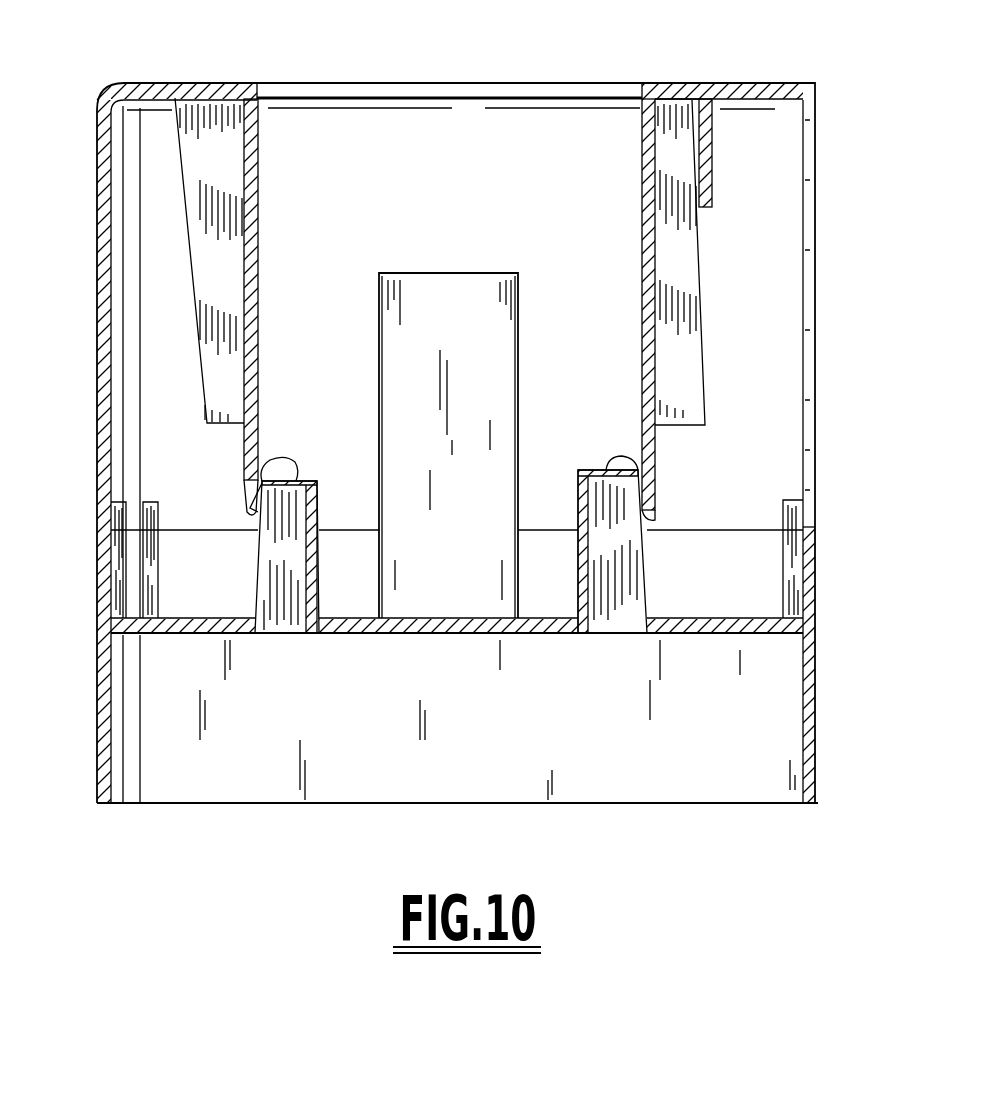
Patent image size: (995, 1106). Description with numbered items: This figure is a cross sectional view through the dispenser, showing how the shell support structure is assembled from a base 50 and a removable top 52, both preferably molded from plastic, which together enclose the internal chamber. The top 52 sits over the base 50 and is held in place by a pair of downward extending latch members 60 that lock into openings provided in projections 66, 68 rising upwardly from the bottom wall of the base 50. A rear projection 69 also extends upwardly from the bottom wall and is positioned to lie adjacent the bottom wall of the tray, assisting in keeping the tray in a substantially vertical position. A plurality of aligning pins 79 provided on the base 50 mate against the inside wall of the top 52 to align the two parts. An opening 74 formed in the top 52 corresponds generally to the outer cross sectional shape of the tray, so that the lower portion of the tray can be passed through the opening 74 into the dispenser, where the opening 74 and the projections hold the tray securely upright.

The base 50 is at (818, 728).
The top 52 is at (813, 268).
The latch member 60 is at (256, 212).
The projection 66 is at (318, 478).
The projection 68 is at (578, 480).
The rear projection 69 is at (481, 240).
The opening 74 is at (376, 85).
The aligning pin 79 is at (113, 545).